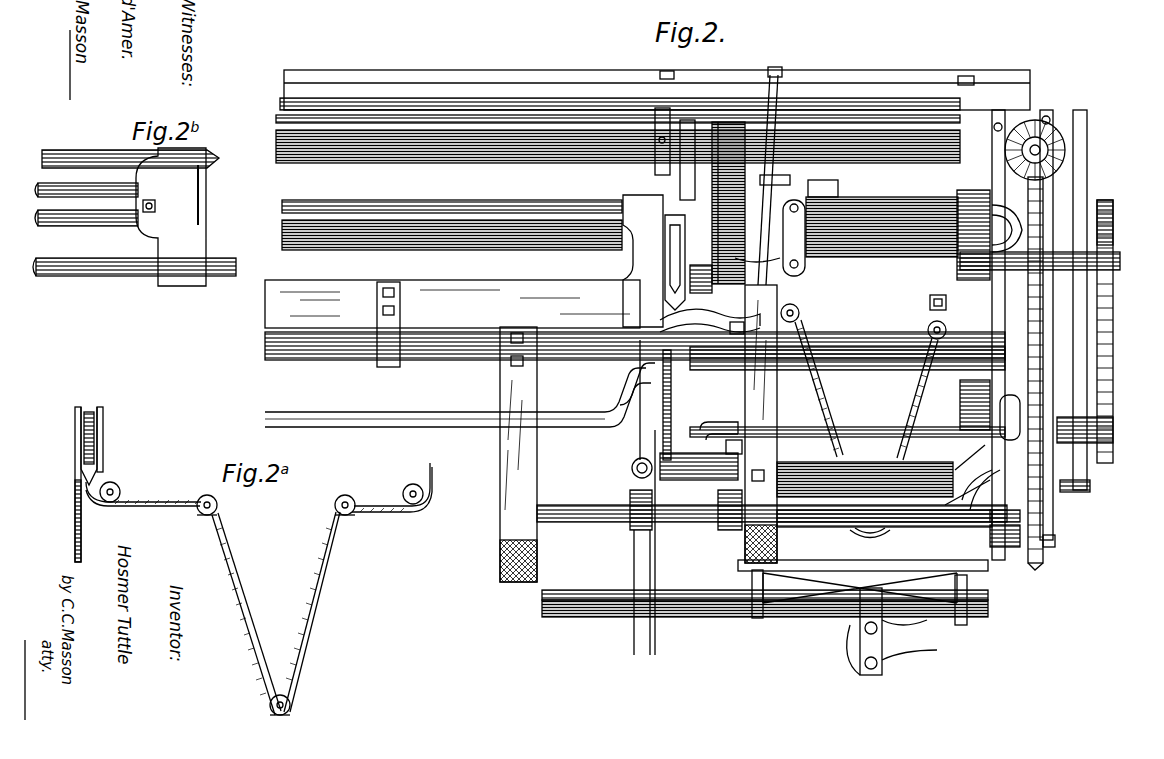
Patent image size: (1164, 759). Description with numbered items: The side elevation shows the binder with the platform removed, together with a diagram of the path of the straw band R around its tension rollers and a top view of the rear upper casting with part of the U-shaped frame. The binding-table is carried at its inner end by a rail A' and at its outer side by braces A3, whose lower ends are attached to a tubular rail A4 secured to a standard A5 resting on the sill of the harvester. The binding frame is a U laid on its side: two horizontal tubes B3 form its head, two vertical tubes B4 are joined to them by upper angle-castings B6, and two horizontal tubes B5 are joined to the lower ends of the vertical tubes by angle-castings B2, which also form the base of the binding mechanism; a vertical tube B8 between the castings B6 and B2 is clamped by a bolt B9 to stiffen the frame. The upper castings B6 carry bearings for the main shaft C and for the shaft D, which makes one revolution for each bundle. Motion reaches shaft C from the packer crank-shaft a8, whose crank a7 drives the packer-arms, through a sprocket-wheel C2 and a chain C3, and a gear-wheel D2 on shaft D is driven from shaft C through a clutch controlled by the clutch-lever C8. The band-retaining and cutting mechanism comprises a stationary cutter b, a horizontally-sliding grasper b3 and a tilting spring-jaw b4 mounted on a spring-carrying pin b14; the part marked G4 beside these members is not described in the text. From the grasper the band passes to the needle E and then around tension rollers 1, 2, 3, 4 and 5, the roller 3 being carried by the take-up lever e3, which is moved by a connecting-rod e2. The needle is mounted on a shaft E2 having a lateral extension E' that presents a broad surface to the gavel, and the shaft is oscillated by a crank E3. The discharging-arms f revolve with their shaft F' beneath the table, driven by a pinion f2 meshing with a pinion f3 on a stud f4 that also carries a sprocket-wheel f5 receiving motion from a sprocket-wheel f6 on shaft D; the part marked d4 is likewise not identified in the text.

In FIG. 2, the rail A' is at (452, 333).
In FIG. 2, the braces A3 is at (757, 618).
In FIG. 2, the tubular rail A4 is at (695, 605).
In FIG. 2, the standard A5 is at (916, 640).
In FIG. 2, the angle-castings B2 is at (975, 491).
In FIG. 2, the parallel tubes B3 is at (882, 213).
In FIG. 2B, the parallel tubes B3 is at (86, 204).
In FIG. 2, the vertical tubes B4 is at (1006, 287).
In FIG. 2, the horizontal tubes B5 is at (848, 482).
In FIG. 2, the angle-castings B6 is at (957, 238).
In FIG. 2B, the angle-castings B6 is at (171, 217).
In FIG. 2, the tube B8 is at (975, 410).
In FIG. 2, the bolt B9 is at (872, 185).
In FIG. 2, the main shaft C is at (1013, 267).
In FIG. 2B, the main shaft C is at (134, 257).
In FIG. 2, the sprocket-wheel C2 is at (1113, 226).
In FIG. 2, the chain C3 is at (1120, 331).
In FIG. 2, the clutch-lever C8 is at (794, 238).
In FIG. 2, the shaft D is at (1060, 195).
In FIG. 2B, the shaft D is at (145, 161).
In FIG. 2, the gear-wheel D2 is at (729, 194).
In FIG. 2, the needle E is at (674, 405).
In FIG. 2A, the needle E is at (96, 484).
In FIG. 2, the lateral extension E' is at (721, 421).
In FIG. 2, the needle-shaft E2 is at (676, 470).
In FIG. 2, the crank E3 is at (1075, 492).
In FIG. 2, the rod F' is at (772, 525).
In FIG. 2, the bracket G4 is at (643, 261).
In FIG. 2, the band R is at (866, 390).
In FIG. 2A, the band R is at (259, 589).
In FIG. 2, the crank a7 is at (627, 400).
In FIG. 2, the packer crank-shaft a8 is at (1126, 430).
In FIG. 2, the stationary cutter b is at (706, 287).
In FIG. 2, the sliding grasper b3 is at (672, 305).
In FIG. 2, the spring-jaw b4 is at (708, 326).
In FIG. 2, the spring-carrying pin b14 is at (745, 335).
In FIG. 2, the pawl d4 is at (775, 245).
In FIG. 2, the connecting-rod e2 is at (1008, 408).
In FIG. 2, the take-up lever e3 is at (895, 530).
In FIG. 2, the discharging-arms f is at (678, 508).
In FIG. 2, the pinion f2 is at (1013, 510).
In FIG. 2, the pinion f3 is at (1005, 548).
In FIG. 2, the stud f4 is at (1055, 541).
In FIG. 2, the sprocket-wheel f5 is at (1036, 568).
In FIG. 2, the sprocket-wheel f6 is at (1045, 182).
In FIG. 2A, the roller 1 is at (111, 484).
In FIG. 2, the roller 2 is at (801, 319).
In FIG. 2A, the roller 2 is at (207, 497).
In FIG. 2, the pulley 3 is at (855, 530).
In FIG. 2A, the pulley 3 is at (280, 697).
In FIG. 2, the roller 4 is at (923, 329).
In FIG. 2A, the roller 4 is at (345, 496).
In FIG. 2, the roller 5 is at (1020, 310).
In FIG. 2A, the roller 5 is at (413, 485).